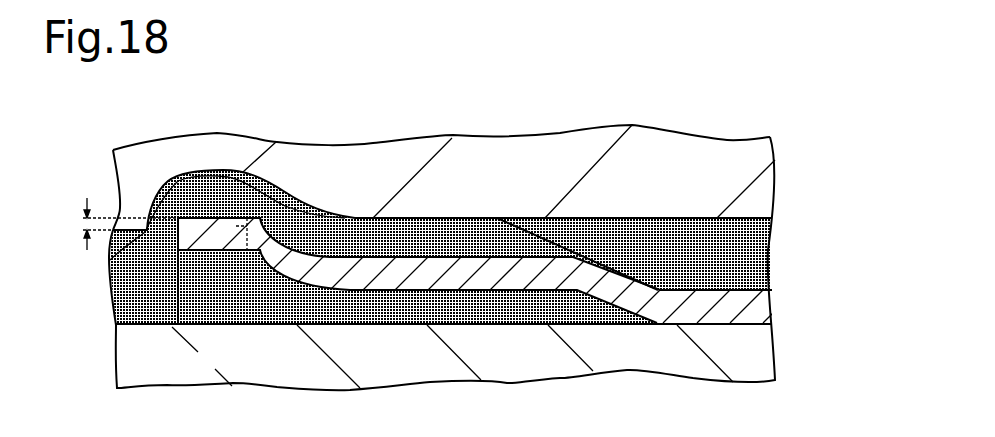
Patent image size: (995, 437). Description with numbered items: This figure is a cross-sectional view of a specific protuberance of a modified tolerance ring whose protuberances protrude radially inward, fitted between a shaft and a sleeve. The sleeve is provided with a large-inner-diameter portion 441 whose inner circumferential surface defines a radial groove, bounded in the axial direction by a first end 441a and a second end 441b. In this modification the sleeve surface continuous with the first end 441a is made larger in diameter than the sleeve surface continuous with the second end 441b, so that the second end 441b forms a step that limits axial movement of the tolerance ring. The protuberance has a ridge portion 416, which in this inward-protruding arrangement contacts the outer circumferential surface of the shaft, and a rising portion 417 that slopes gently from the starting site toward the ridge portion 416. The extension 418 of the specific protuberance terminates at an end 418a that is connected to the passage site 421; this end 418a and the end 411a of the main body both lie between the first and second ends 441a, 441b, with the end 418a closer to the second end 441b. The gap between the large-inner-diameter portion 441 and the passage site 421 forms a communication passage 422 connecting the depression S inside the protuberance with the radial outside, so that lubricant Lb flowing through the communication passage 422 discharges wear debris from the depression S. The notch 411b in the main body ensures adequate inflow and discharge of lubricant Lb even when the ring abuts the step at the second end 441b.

The ridge portion 416 is at (743, 324).
The rising portion 417 is at (598, 292).
The extension 418 is at (367, 290).
The end of the extension 418a is at (260, 250).
The passage site 421 is at (217, 243).
The communication passage 422 is at (207, 212).
The large-inner-diameter portion 441 is at (221, 179).
The first end of the large-inner-diameter portion 441a is at (358, 223).
The second end of the large-inner-diameter portion 441b is at (110, 260).
The end of the main body 411a is at (115, 290).
The notch 411b is at (252, 207).
The lubricant Lb is at (573, 228).
The depression S is at (651, 245).